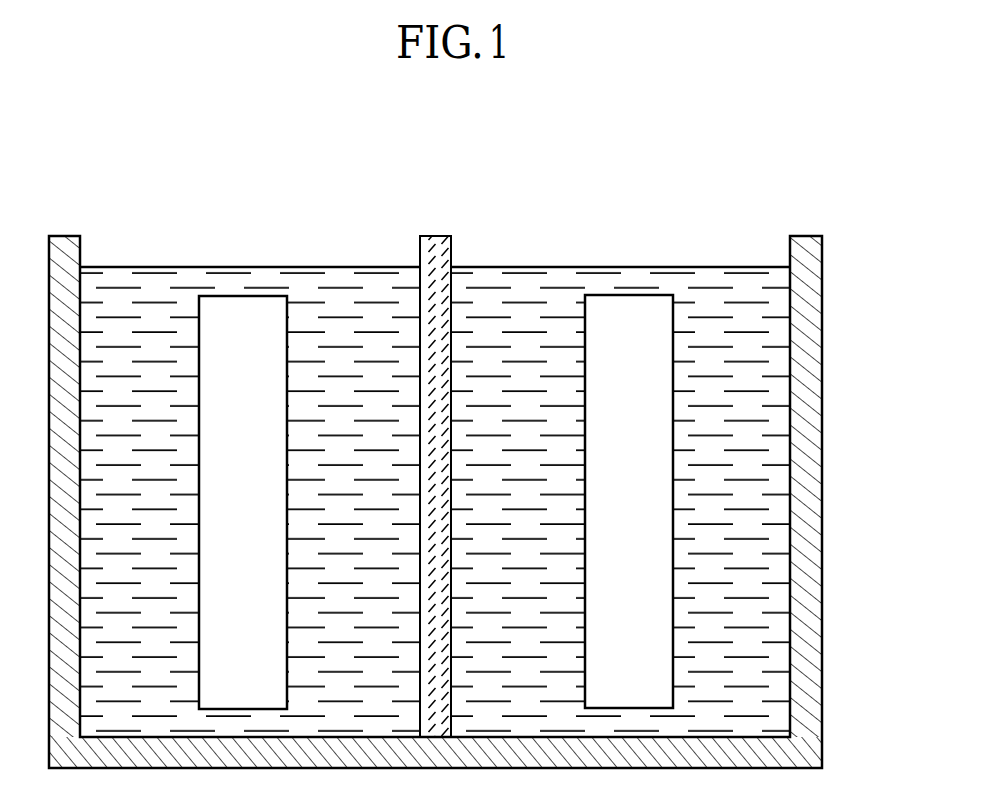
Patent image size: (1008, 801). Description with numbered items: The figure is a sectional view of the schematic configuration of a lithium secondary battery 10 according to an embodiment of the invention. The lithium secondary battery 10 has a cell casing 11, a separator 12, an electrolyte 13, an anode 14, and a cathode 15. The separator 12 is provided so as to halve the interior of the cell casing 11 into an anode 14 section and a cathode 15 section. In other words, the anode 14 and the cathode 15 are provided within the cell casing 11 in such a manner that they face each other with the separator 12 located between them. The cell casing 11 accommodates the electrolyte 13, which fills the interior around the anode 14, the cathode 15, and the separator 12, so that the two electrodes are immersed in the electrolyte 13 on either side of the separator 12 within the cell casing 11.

The lithium secondary battery 10 is at (464, 462).
The cell casing 11 is at (818, 356).
The separator 12 is at (433, 242).
The electrolyte 13 is at (733, 278).
The anode 14 is at (245, 307).
The cathode 15 is at (627, 305).